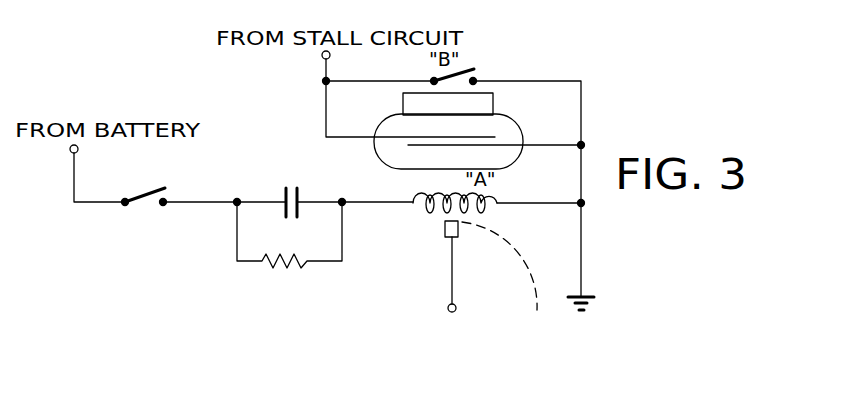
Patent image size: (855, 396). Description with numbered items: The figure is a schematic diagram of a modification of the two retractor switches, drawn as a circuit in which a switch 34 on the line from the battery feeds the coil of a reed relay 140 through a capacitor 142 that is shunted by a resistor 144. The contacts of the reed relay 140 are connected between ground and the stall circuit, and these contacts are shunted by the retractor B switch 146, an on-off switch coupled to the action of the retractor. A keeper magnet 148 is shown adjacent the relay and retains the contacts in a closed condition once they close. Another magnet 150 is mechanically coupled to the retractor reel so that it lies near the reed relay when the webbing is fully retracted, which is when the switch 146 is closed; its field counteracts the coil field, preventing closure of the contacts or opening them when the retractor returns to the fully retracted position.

The battery switch 34 is at (145, 195).
The reed relay 140 is at (427, 218).
The capacitor 142 is at (286, 187).
The resistor 144 is at (281, 262).
The retractor B switch 146 is at (462, 70).
The keeper magnet 148 is at (403, 101).
The magnet 150 is at (458, 230).